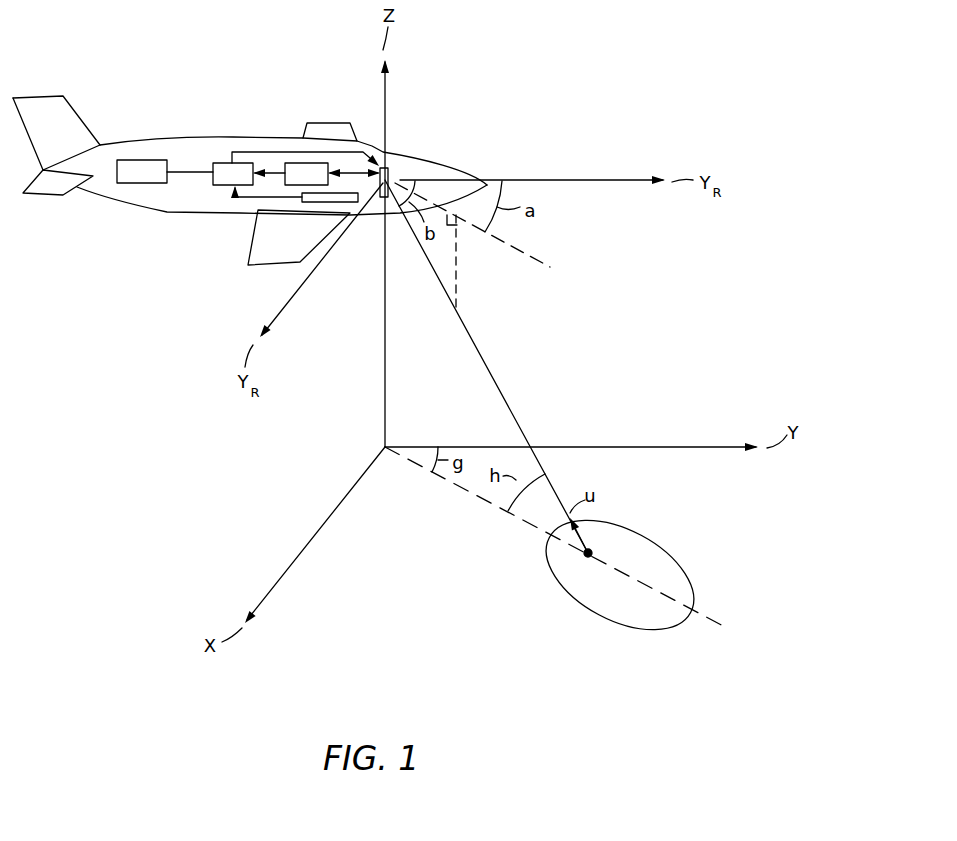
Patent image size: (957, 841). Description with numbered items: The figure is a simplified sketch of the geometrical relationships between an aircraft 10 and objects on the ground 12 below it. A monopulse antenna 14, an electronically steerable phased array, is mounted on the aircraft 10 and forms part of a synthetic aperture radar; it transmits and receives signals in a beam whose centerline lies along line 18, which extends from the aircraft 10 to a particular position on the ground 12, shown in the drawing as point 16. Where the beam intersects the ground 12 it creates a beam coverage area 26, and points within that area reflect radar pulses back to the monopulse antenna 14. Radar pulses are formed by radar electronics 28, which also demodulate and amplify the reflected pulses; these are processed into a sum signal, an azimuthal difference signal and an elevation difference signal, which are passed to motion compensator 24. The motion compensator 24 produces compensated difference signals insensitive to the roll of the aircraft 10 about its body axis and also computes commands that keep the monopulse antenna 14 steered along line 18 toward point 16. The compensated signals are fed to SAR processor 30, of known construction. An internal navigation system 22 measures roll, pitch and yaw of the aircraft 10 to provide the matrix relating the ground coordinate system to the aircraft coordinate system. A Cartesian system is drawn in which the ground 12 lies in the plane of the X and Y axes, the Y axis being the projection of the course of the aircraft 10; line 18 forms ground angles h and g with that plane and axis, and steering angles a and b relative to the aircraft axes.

The aircraft 10 is at (170, 140).
The ground 12 is at (671, 489).
The monopulse antenna 14 is at (389, 166).
The target 16 is at (582, 565).
The line 18 is at (484, 364).
The internal navigation system 22 is at (355, 203).
The motion compensator 24 is at (210, 177).
The beam coverage area 26 is at (682, 565).
The radar electronics 28 is at (290, 162).
The SAR processor 30 is at (110, 183).